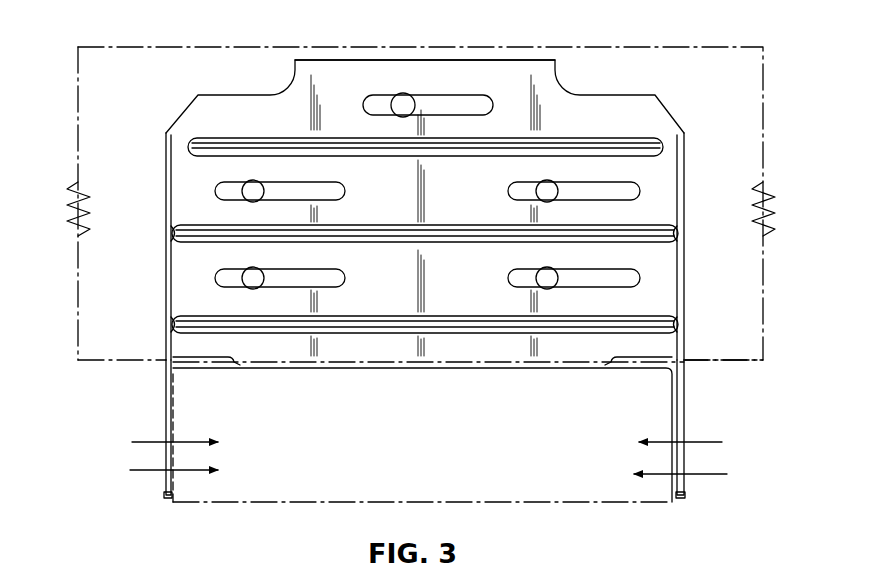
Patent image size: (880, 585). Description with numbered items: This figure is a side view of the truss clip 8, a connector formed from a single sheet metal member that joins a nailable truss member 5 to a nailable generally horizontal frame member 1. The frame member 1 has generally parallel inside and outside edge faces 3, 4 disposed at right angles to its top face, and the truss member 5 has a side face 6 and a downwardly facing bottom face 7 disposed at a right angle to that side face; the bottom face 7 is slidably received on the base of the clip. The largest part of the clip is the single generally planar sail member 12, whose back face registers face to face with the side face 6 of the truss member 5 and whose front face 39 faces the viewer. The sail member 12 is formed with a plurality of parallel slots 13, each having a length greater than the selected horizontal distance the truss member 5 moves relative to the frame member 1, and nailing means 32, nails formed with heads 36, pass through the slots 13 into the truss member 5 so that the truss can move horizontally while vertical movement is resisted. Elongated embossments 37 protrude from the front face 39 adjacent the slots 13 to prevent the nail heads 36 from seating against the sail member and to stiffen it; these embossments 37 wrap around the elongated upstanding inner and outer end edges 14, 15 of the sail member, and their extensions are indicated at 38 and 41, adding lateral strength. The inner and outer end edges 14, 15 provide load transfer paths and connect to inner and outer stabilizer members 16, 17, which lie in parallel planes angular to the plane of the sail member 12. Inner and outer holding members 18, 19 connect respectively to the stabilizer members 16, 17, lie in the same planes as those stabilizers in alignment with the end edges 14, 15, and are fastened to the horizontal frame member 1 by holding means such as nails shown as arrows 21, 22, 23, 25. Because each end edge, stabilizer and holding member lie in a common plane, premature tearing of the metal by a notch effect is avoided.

The horizontal frame member 1 is at (300, 512).
The inside edge face 3 is at (686, 500).
The outside edge face 4 is at (162, 500).
The truss member 5 is at (682, 44).
The side face 6 is at (133, 235).
The bottom face 7 is at (107, 368).
The truss clip 8 is at (236, 92).
The sail member 12 is at (515, 59).
The slots 13 is at (438, 99).
The inner end edge 14 is at (680, 165).
The outer end edge 15 is at (172, 183).
The inner stabilizer member 16 is at (681, 346).
The outer stabilizer member 17 is at (166, 352).
The inner holding member 18 is at (687, 404).
The outer holding member 19 is at (165, 382).
The holding means 21 is at (141, 470).
The holding means 22 is at (140, 440).
The holding means 23 is at (708, 442).
The holding means 25 is at (700, 474).
The nailing means 32 is at (394, 97).
The nail heads 36 is at (256, 189).
The elongated embossments 37 is at (590, 146).
The embossment extension 38 is at (672, 234).
The front face 39 is at (468, 211).
The embossment extension 41 is at (176, 230).